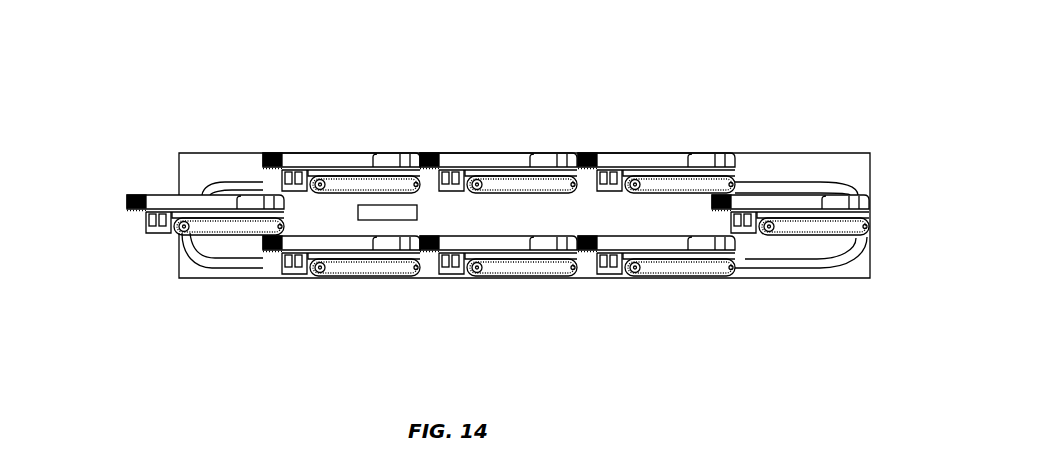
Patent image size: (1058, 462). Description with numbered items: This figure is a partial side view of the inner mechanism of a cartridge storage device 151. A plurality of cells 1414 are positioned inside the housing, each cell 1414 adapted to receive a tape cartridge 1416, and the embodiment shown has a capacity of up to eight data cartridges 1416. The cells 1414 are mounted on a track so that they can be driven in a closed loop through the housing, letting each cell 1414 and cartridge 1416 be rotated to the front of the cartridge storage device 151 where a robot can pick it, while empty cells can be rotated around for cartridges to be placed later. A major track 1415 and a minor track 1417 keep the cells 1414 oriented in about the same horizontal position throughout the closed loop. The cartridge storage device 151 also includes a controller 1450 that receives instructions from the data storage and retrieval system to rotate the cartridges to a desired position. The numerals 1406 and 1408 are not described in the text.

The cartridge storage device 151 is at (735, 97).
The cable loop 1406 is at (177, 262).
The housing 1408 is at (878, 160).
The cell 1414 is at (172, 227).
The major track 1415 is at (770, 238).
The tape cartridge 1416 is at (322, 152).
The minor track 1417 is at (823, 250).
The controller 1450 is at (392, 205).